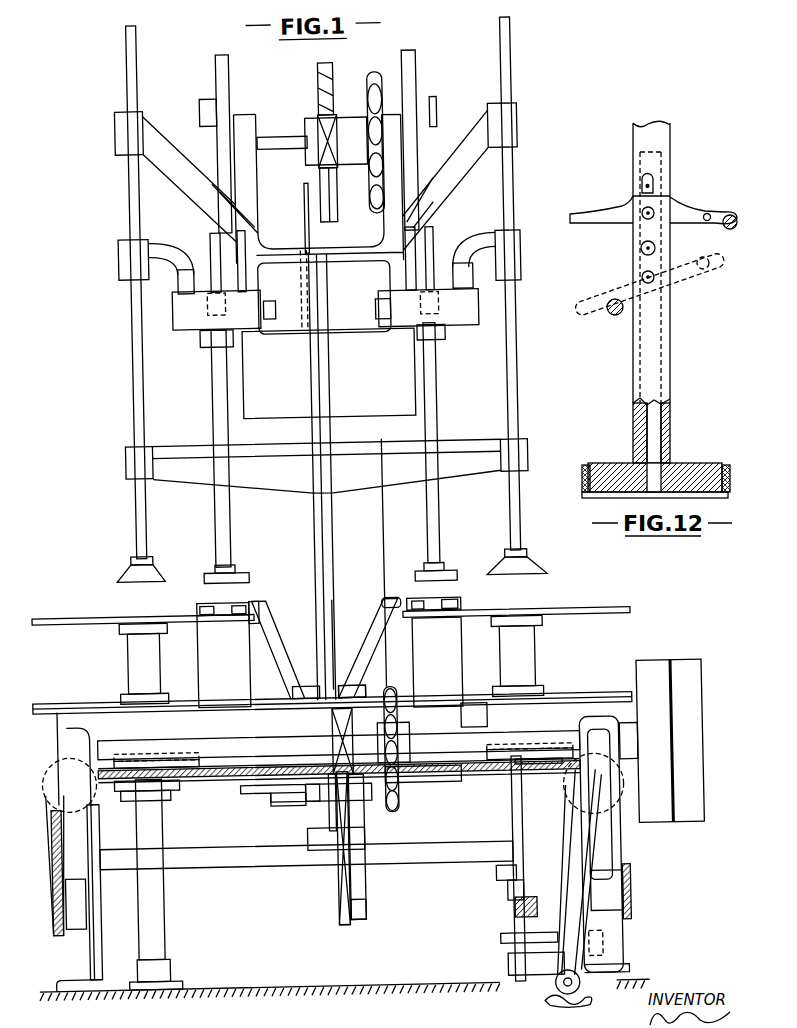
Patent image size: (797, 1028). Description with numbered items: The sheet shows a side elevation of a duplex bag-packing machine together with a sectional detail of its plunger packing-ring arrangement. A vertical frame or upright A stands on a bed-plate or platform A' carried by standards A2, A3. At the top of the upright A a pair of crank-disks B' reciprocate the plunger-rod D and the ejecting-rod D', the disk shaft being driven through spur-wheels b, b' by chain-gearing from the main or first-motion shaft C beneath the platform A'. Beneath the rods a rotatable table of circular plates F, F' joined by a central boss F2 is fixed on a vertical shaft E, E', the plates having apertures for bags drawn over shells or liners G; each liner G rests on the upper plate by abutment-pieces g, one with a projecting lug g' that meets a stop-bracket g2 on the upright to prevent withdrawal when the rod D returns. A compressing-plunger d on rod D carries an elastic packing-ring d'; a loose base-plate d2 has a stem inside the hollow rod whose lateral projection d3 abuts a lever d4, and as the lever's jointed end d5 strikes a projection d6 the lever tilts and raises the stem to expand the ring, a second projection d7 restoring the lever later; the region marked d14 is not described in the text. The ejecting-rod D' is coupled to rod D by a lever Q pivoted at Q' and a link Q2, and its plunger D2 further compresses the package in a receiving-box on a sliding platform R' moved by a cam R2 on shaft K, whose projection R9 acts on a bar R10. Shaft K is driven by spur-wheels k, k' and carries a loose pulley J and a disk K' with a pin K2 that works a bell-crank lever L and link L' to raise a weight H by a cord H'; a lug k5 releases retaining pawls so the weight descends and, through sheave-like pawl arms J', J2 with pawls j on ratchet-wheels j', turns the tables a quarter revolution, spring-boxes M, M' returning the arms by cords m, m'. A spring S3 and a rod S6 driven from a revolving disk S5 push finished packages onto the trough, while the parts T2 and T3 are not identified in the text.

In FIG. 1, the vertical frame or upright A is at (329, 477).
In FIG. 1, the bed-plate or platform A' is at (57, 846).
In FIG. 1, the standard A2 is at (585, 934).
In FIG. 1, the standard A3 is at (87, 932).
In FIG. 1, the crank-disk B' is at (328, 141).
In FIG. 1, the spur-wheel b is at (337, 168).
In FIG. 1, the spur-wheel b' is at (335, 88).
In FIG. 1, the main or first-motion shaft C is at (284, 755).
In FIG. 1, the plunger-rod D is at (327, 445).
In FIG. 12, the plunger-rod D is at (661, 262).
In FIG. 1, the ejecting-rod D' is at (334, 288).
In FIG. 1, the plunger D2 is at (545, 567).
In FIG. 1, the compressing-plunger d is at (337, 566).
In FIG. 12, the compressing-plunger d is at (655, 466).
In FIG. 12, the packing-ring d' is at (646, 478).
In FIG. 12, the loose base-plate d2 is at (590, 498).
In FIG. 12, the lateral projection d3 is at (652, 190).
In FIG. 12, the lever d4 is at (600, 215).
In FIG. 12, the jointed end d5 is at (710, 216).
In FIG. 12, the projection d6 is at (732, 226).
In FIG. 12, the projection d7 is at (618, 303).
In FIG. 12, the collar hole d14 is at (660, 197).
In FIG. 1, the pin or shaft E is at (485, 719).
In FIG. 1, the pin or shaft E' is at (159, 884).
In FIG. 1, the lower circular plate F is at (332, 692).
In FIG. 1, the upper circular plate F' is at (331, 630).
In FIG. 1, the central boss F2 is at (530, 665).
In FIG. 1, the shell or metal liner G is at (470, 600).
In FIG. 1, the abutment-piece g is at (318, 618).
In FIG. 1, the projecting lug g' is at (325, 622).
In FIG. 1, the stop-bracket g2 is at (375, 650).
In FIG. 1, the weight H is at (556, 988).
In FIG. 1, the cord or chain H' is at (356, 863).
In FIG. 1, the wheel or pulley J is at (604, 844).
In FIG. 1, the sheave-like pawl plate or arm J' is at (508, 869).
In FIG. 1, the sheave-like pawl plate or arm J2 is at (160, 800).
In FIG. 1, the spring pawl or ratchet j is at (358, 771).
In FIG. 1, the ratchet-wheel j' is at (344, 748).
In FIG. 1, the shaft K is at (360, 847).
In FIG. 1, the disk K' is at (496, 889).
In FIG. 1, the laterally-projecting pin K2 is at (507, 908).
In FIG. 1, the spur-wheel k is at (372, 749).
In FIG. 1, the spur-wheel k' is at (307, 807).
In FIG. 1, the projecting lug k5 is at (500, 875).
In FIG. 1, the bell-crank lever L is at (522, 939).
In FIG. 1, the link L' is at (523, 962).
In FIG. 1, the spring-box M is at (613, 892).
In FIG. 1, the spring-box M' is at (93, 903).
In FIG. 1, the cord or chain m is at (585, 864).
In FIG. 1, the cord or chain m' is at (82, 846).
In FIG. 1, the lever Q is at (322, 268).
In FIG. 1, the pivot Q' is at (310, 285).
In FIG. 1, the link Q2 is at (452, 338).
In FIG. 1, the sliding platform R' is at (351, 793).
In FIG. 1, the cam R2 is at (358, 912).
In FIG. 1, the projection R9 is at (296, 792).
In FIG. 1, the bar R10 is at (340, 930).
In FIG. 1, the spring S3 is at (318, 645).
In FIG. 1, the revolving disk S5 is at (311, 180).
In FIG. 1, the rod S6 is at (311, 214).
In FIG. 1, the column T2 is at (459, 657).
In FIG. 1, the column base T3 is at (365, 690).